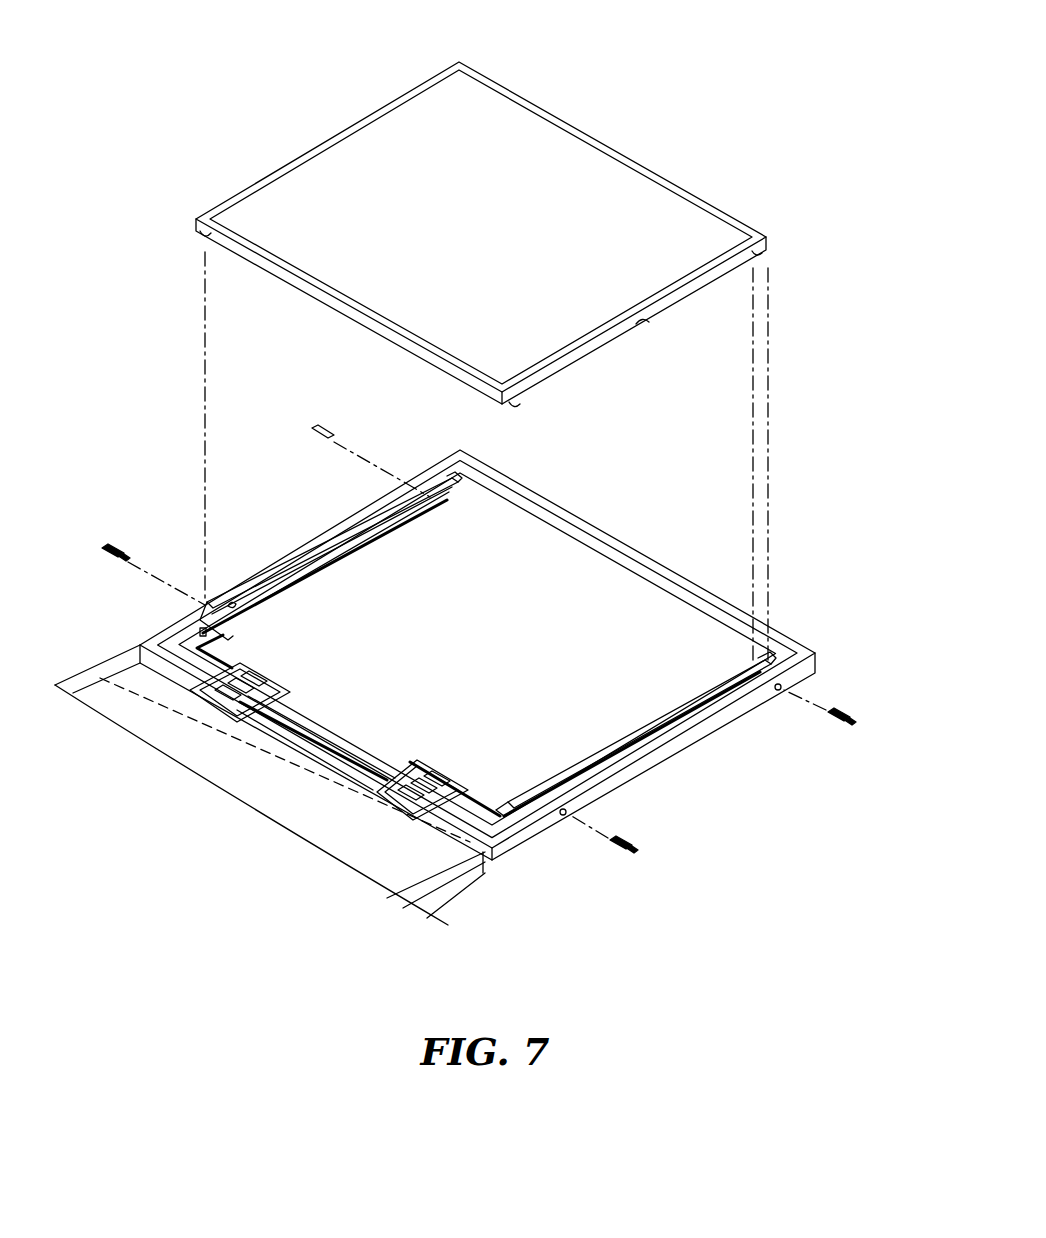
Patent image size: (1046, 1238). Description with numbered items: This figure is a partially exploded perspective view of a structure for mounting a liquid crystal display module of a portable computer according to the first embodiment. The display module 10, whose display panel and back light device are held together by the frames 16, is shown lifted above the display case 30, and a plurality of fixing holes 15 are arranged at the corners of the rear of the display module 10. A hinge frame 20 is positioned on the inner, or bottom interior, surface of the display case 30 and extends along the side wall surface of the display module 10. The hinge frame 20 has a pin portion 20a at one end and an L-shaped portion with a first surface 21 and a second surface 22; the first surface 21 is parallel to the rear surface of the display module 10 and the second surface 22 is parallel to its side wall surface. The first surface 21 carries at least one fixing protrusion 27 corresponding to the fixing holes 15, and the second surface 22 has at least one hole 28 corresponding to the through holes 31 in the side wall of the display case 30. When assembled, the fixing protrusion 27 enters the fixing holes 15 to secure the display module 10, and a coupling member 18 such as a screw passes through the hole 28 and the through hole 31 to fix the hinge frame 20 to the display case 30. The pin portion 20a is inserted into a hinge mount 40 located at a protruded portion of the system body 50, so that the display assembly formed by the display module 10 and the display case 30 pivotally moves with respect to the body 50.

The display module 10 is at (668, 124).
The fixing hole 15 is at (768, 252).
The frame 16 is at (648, 320).
The coupling member 18 is at (110, 543).
The hinge frame 20 is at (372, 530).
The pin portion 20a is at (425, 768).
The first surface 21 is at (312, 572).
The second surface 22 is at (318, 549).
The fixing protrusion 27 is at (204, 634).
The hole 28 is at (231, 612).
The display case 30 is at (577, 564).
The through hole 31 is at (570, 812).
The hinge mount 40 is at (234, 692).
The system body 50 is at (97, 670).